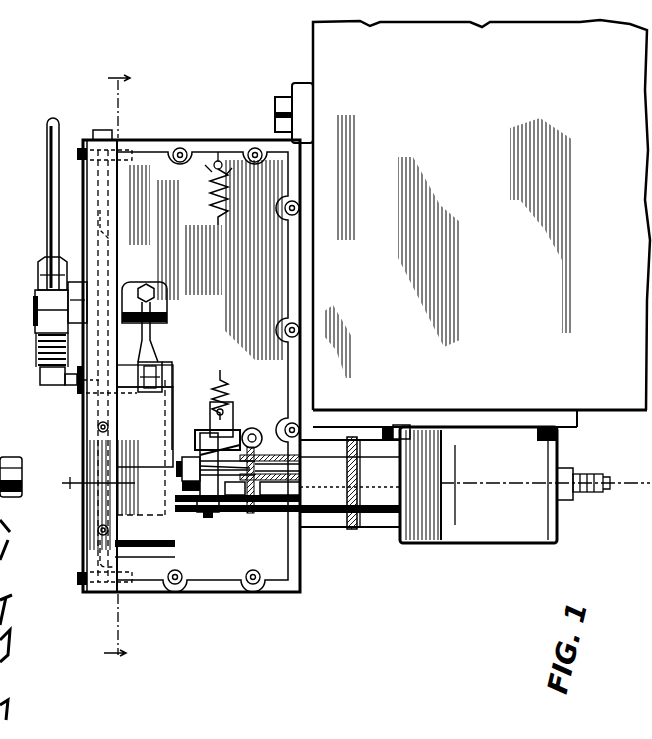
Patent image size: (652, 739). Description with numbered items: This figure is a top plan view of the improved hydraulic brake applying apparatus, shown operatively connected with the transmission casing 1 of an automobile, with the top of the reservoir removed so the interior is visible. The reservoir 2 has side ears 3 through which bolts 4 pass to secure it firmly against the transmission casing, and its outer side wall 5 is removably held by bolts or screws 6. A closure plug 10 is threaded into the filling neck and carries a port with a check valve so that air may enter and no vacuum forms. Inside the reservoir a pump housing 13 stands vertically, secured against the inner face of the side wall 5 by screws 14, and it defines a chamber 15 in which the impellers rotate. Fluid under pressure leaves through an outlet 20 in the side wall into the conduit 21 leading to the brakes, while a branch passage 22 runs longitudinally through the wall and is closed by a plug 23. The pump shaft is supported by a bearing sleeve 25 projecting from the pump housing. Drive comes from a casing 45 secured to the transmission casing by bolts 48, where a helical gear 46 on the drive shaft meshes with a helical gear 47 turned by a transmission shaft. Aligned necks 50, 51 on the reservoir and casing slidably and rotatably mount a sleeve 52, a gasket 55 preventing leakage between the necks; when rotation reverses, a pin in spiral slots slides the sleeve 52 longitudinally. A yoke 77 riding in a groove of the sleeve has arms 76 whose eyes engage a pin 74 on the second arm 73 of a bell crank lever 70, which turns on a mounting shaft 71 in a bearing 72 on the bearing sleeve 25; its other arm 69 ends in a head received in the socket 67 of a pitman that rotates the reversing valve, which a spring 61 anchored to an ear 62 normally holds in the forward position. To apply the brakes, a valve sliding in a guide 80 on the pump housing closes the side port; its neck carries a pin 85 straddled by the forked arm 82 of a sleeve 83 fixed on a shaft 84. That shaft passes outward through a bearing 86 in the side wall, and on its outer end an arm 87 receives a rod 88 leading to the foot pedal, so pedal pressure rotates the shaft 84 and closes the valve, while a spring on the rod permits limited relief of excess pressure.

The transmission casing 1 is at (481, 223).
The reservoir 2 is at (210, 593).
The side ears 3 is at (115, 367).
The bolts 4 is at (276, 110).
The outer side wall 5 is at (283, 96).
The bolts or screws 6 is at (80, 147).
The closure plug 10 is at (18, 497).
The pump housing 13 is at (182, 472).
The screws 14 is at (184, 480).
The chamber 15 is at (181, 463).
The outlet 20 is at (70, 386).
The conduit 21 is at (43, 385).
The branch passage 22 is at (110, 228).
The plug 23 is at (103, 130).
The bearing sleeve 25 is at (236, 496).
The casing 45 is at (513, 530).
The helical gear 46 is at (401, 425).
The helical gear 47 is at (601, 483).
The bolts 48 is at (560, 433).
The neck 50 is at (325, 527).
The neck 51 is at (385, 528).
The sleeve 52 is at (270, 514).
The gasket 55 is at (353, 530).
The spring 61 is at (232, 395).
The ear 62 is at (219, 160).
The socket 67 is at (238, 435).
The arm 69 is at (200, 441).
The bell crank lever 70 is at (160, 442).
The mounting shaft 71 is at (222, 514).
The bearing 72 is at (206, 518).
The second arm 73 is at (160, 398).
The pin 74 is at (251, 514).
The arms 76 is at (246, 482).
The collar or yoke 77 is at (285, 466).
The guide 80 is at (165, 372).
The arm 82 is at (152, 340).
The sleeve 83 is at (140, 282).
The shaft 84 is at (158, 292).
The pin 85 is at (137, 378).
The fitting 86 is at (78, 282).
The arm 87 is at (40, 300).
The rod 88 is at (46, 188).